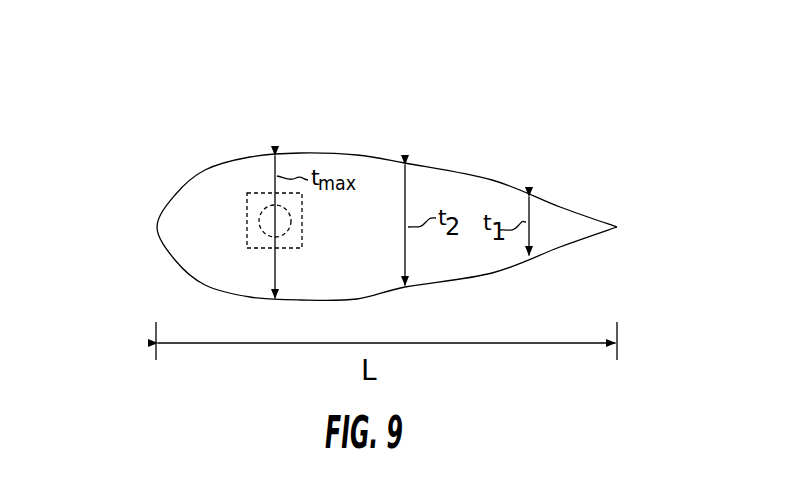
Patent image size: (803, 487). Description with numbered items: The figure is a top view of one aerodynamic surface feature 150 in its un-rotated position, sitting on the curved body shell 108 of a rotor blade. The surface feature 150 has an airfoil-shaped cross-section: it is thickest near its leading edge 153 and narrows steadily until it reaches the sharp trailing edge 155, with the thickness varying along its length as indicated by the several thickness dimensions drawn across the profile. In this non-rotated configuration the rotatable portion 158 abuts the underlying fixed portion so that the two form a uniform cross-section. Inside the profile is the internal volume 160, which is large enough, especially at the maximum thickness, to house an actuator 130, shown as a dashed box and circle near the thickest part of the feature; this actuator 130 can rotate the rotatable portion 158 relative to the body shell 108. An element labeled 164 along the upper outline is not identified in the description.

The aerodynamic surface feature 150 is at (168, 125).
The body shell 108 is at (263, 113).
The upper surface 164 is at (357, 151).
The rotatable portion 158 is at (492, 177).
The trailing edge 155 is at (620, 225).
The leading edge 153 is at (157, 222).
The actuator 130 is at (246, 231).
The internal volume 160 is at (368, 266).